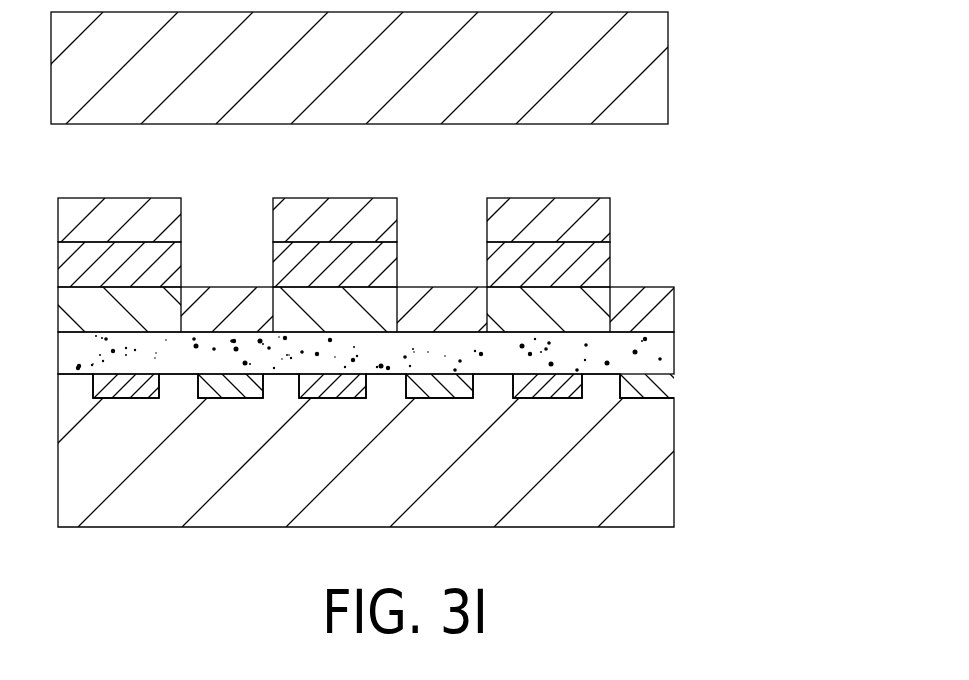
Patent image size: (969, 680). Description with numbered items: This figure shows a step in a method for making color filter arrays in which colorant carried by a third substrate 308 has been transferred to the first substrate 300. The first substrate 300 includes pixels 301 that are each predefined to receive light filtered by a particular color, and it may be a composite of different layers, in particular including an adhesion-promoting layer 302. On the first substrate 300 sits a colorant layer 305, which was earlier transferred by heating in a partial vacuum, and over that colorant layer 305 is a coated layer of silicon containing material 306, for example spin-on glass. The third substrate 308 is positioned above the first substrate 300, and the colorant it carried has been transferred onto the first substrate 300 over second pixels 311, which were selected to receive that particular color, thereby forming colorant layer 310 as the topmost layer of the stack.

The first substrate 300 is at (700, 505).
The pixels 301 is at (573, 399).
The adhesion-promoting layer 302 is at (665, 359).
The colorant layer 305 is at (587, 317).
The layer of silicon containing material 306 is at (603, 267).
The third substrate 308 is at (700, 57).
The colorant layer 310 is at (416, 287).
The second pixels 311 is at (460, 399).